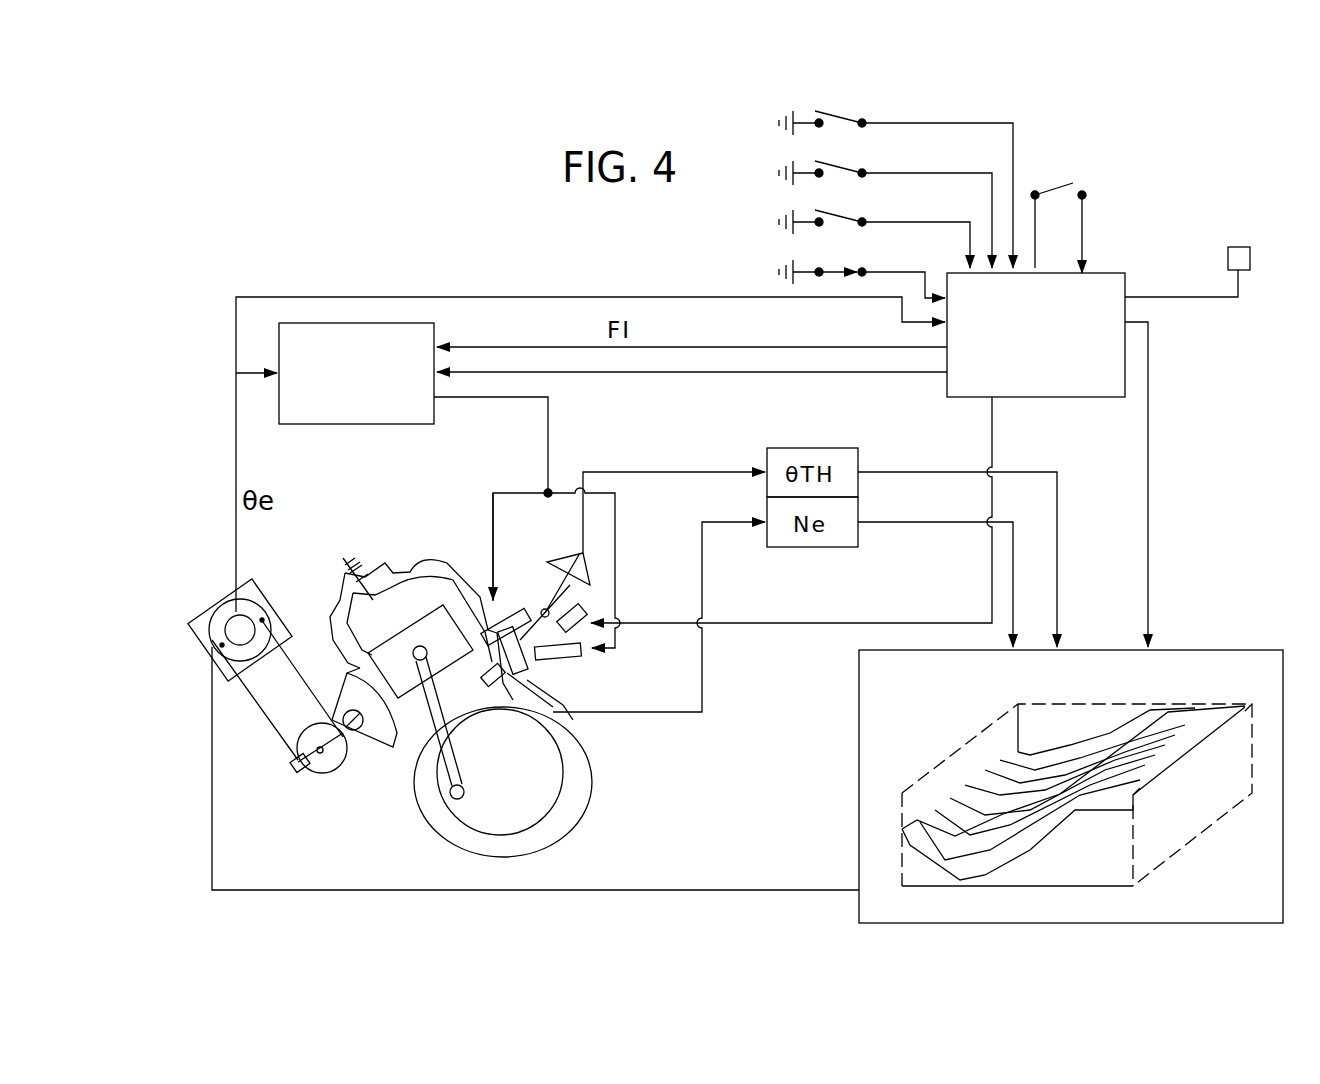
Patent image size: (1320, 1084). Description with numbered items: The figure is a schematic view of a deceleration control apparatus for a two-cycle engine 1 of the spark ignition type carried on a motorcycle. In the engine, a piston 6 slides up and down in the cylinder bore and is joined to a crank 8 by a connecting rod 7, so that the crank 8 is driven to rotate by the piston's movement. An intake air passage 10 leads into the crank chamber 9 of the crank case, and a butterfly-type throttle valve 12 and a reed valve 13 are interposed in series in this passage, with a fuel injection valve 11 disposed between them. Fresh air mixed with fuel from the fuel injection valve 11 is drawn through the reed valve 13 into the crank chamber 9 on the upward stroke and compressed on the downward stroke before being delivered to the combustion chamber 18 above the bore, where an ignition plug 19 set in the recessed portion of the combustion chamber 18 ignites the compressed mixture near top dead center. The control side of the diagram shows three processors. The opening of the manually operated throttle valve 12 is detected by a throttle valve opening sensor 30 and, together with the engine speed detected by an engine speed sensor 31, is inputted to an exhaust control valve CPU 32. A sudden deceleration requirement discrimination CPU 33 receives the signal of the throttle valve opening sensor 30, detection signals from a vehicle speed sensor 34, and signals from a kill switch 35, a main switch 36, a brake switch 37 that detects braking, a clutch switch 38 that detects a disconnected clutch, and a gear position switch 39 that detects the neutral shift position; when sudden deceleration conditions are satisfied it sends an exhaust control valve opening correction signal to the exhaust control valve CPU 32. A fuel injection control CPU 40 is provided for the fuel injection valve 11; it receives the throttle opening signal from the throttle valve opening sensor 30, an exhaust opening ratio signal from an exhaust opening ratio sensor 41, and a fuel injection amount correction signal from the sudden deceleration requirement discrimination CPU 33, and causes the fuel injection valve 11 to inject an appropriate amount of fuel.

The two-cycle engine 1 is at (495, 668).
The piston 6 is at (430, 656).
The connecting rod 7 is at (432, 690).
The crank 8 is at (450, 796).
The crank chamber 9 is at (430, 745).
The intake air passage 10 is at (540, 641).
The fuel injection valve 11 is at (486, 600).
The throttle valve 12 is at (548, 614).
The reed valve 13 is at (528, 683).
The combustion chamber 18 is at (420, 608).
The ignition plug 19 is at (345, 565).
The throttle valve opening sensor 30 is at (545, 613).
The engine speed sensor 31 is at (502, 690).
The exhaust control valve CPU 32 is at (1198, 673).
The sudden deceleration requirement discrimination CPU 33 is at (1090, 292).
The vehicle speed sensor 34 is at (1260, 259).
The kill switch 35 is at (1062, 190).
The main switch 36 is at (838, 116).
The brake switch 37 is at (835, 164).
The clutch switch 38 is at (835, 213).
The gear position switch 39 is at (828, 271).
The fuel injection control CPU 40 is at (364, 335).
The exhaust opening ratio sensor 41 is at (235, 630).